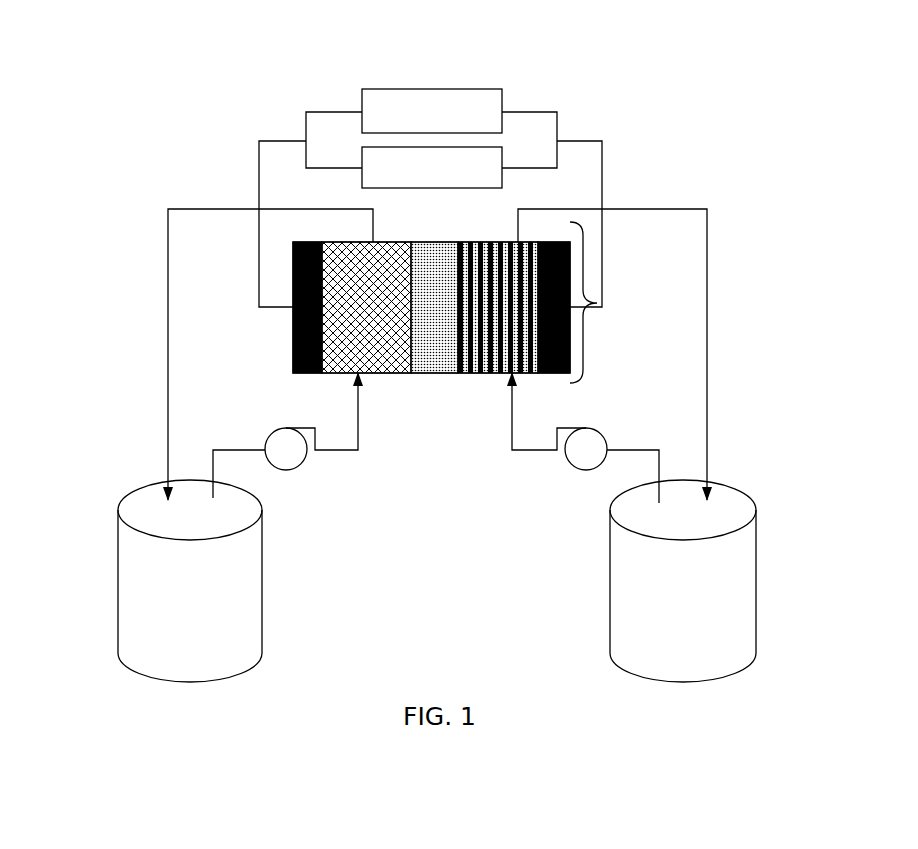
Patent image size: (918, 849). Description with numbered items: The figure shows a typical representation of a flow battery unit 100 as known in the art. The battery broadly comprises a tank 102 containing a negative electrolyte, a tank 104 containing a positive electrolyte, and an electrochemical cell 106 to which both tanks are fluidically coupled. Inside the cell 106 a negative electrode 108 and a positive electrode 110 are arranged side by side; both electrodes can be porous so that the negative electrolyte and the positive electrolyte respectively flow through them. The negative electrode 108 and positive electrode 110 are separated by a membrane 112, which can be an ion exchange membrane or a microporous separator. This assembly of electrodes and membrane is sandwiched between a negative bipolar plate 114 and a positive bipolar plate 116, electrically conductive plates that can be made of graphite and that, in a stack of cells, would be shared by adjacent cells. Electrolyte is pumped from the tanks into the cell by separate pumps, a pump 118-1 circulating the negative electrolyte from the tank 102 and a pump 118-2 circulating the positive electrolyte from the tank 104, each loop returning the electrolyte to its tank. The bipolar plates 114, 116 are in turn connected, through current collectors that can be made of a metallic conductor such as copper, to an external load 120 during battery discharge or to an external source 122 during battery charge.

The flow battery unit 100 is at (122, 48).
The tank 102 is at (147, 600).
The tank 104 is at (752, 584).
The electrochemical cell 106 is at (597, 303).
The negative electrode 108 is at (350, 250).
The positive electrode 110 is at (515, 248).
The membrane 112 is at (443, 346).
The negative bipolar plate 114 is at (293, 268).
The positive bipolar plate 116 is at (570, 348).
The pump 118-1 is at (265, 435).
The pump 118-2 is at (606, 437).
The external load 120 is at (505, 148).
The external source 122 is at (505, 90).